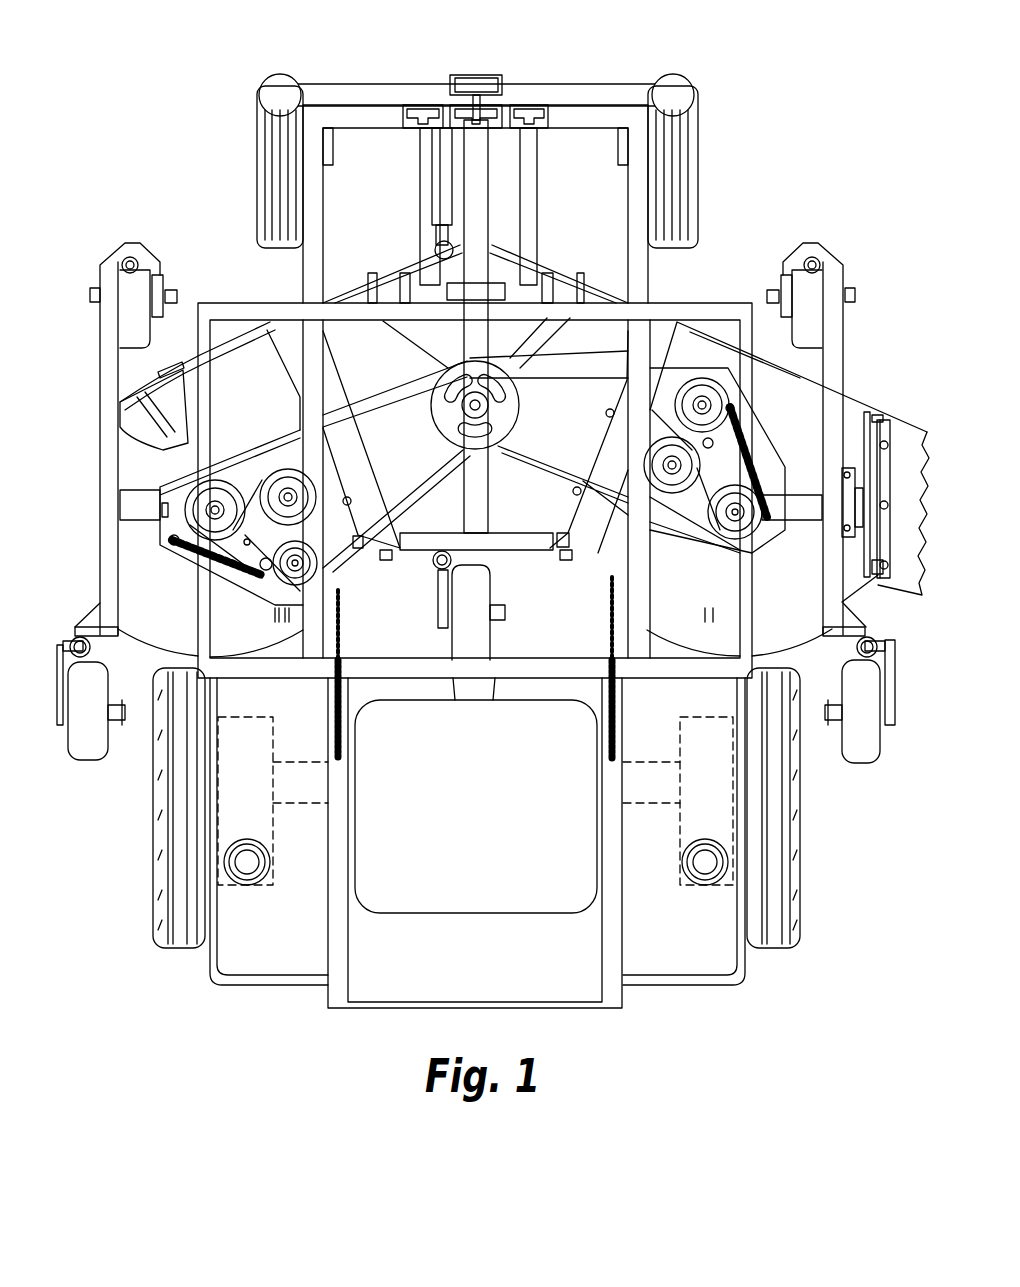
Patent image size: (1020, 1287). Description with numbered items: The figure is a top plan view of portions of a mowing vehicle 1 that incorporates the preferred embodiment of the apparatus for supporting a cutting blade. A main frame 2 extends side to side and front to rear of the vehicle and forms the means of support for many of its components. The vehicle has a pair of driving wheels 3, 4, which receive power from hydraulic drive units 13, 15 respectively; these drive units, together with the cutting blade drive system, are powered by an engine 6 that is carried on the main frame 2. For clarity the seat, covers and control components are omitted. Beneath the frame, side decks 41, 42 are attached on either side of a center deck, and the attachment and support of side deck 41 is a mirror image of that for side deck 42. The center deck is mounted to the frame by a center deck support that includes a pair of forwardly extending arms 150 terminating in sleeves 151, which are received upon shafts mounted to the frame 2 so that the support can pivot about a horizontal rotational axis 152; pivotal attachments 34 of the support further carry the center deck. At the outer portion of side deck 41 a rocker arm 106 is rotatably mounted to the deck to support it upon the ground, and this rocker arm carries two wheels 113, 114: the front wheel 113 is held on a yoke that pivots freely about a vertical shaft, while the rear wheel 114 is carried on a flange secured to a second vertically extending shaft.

The mowing vehicle 1 is at (198, 160).
The main frame 2 is at (267, 315).
The driving wheel 3 is at (160, 898).
The driving wheel 4 is at (790, 850).
The engine 6 is at (548, 885).
The hydraulic drive unit 13 is at (232, 810).
The hydraulic drive unit 15 is at (717, 797).
The pivotal attachments 34 is at (412, 292).
The side deck 41 is at (172, 601).
The side deck 42 is at (799, 601).
The rocker arm 106 is at (110, 365).
The wheel 113 is at (137, 297).
The wheel 114 is at (87, 740).
The forwardly extending arms 150 is at (552, 138).
The sleeves 151 is at (524, 116).
The horizontal rotational axis 152 is at (592, 118).